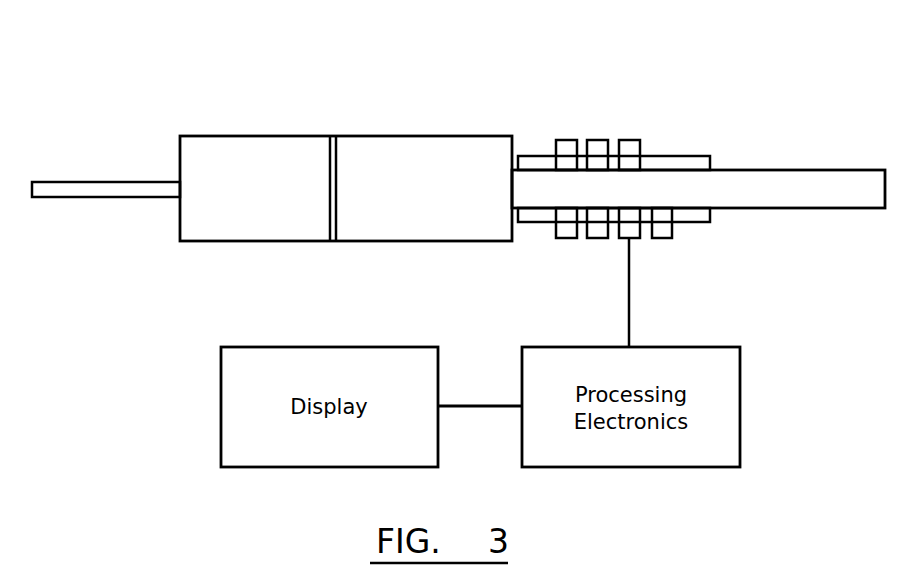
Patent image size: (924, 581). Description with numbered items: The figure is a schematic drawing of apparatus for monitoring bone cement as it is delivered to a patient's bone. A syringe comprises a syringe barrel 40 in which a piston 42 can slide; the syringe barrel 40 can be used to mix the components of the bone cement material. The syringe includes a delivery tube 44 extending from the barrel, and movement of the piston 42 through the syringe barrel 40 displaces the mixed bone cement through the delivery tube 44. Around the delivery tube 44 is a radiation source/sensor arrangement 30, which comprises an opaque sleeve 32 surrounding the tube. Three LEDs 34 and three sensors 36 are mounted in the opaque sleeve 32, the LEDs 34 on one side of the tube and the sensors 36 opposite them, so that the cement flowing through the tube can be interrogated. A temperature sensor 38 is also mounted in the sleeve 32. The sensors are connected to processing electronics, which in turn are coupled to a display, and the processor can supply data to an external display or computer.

The radiation source/sensor arrangement 30 is at (607, 124).
The opaque sleeve 32 is at (683, 156).
The LEDs 34 is at (562, 140).
The sensors 36 is at (624, 239).
The temperature sensor 38 is at (663, 239).
The syringe barrel 40 is at (176, 151).
The piston 42 is at (333, 136).
The delivery tube 44 is at (812, 170).